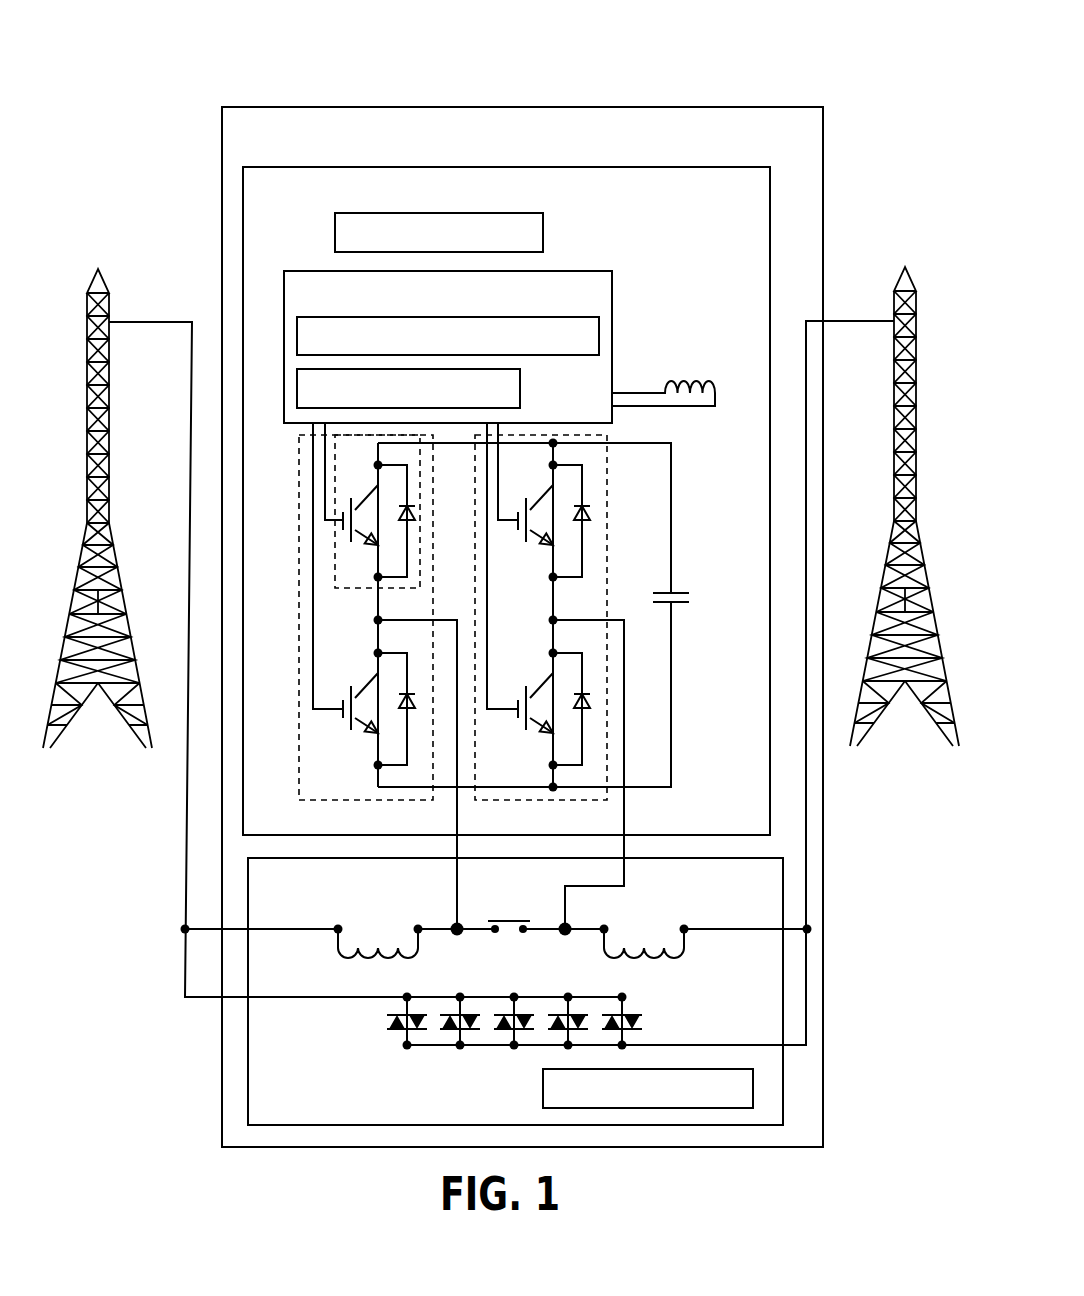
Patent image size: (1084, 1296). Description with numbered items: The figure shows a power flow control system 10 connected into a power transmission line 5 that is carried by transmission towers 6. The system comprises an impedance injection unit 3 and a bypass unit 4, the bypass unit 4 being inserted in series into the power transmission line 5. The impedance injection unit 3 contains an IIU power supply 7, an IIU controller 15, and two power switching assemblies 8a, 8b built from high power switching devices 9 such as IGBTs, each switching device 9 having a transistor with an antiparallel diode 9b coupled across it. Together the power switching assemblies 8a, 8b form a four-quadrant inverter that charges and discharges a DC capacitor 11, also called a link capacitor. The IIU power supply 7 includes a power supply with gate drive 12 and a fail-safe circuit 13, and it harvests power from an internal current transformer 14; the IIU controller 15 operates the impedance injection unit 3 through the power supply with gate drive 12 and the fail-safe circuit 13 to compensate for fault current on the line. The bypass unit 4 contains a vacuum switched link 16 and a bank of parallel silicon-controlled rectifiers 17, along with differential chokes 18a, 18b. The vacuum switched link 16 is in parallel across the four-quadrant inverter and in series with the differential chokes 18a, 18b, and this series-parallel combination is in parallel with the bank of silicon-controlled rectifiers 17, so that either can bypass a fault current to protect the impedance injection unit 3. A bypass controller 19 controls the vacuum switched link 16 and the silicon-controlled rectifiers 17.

The power flow control system 10 is at (273, 92).
The impedance injection unit 3 is at (530, 165).
The bypass unit 4 is at (697, 861).
The power transmission line 5 is at (147, 318).
The transmission towers 6 is at (108, 445).
The IIU power supply 7 is at (590, 271).
The power switching assembly 8a is at (298, 748).
The power switching assembly 8b is at (607, 724).
The high power switching device 9 is at (360, 590).
The antiparallel diode 9b is at (422, 521).
The DC capacitor 11 is at (678, 585).
The power supply with gate drive 12 is at (600, 340).
The fail-safe circuit 13 is at (520, 395).
The internal current transformer 14 is at (628, 390).
The IIU controller 15 is at (543, 227).
The vacuum switched link 16 is at (508, 915).
The silicon-controlled rectifiers 17 is at (430, 1053).
The differential choke 18a is at (336, 957).
The differential choke 18b is at (688, 950).
The bypass controller 19 is at (543, 1091).